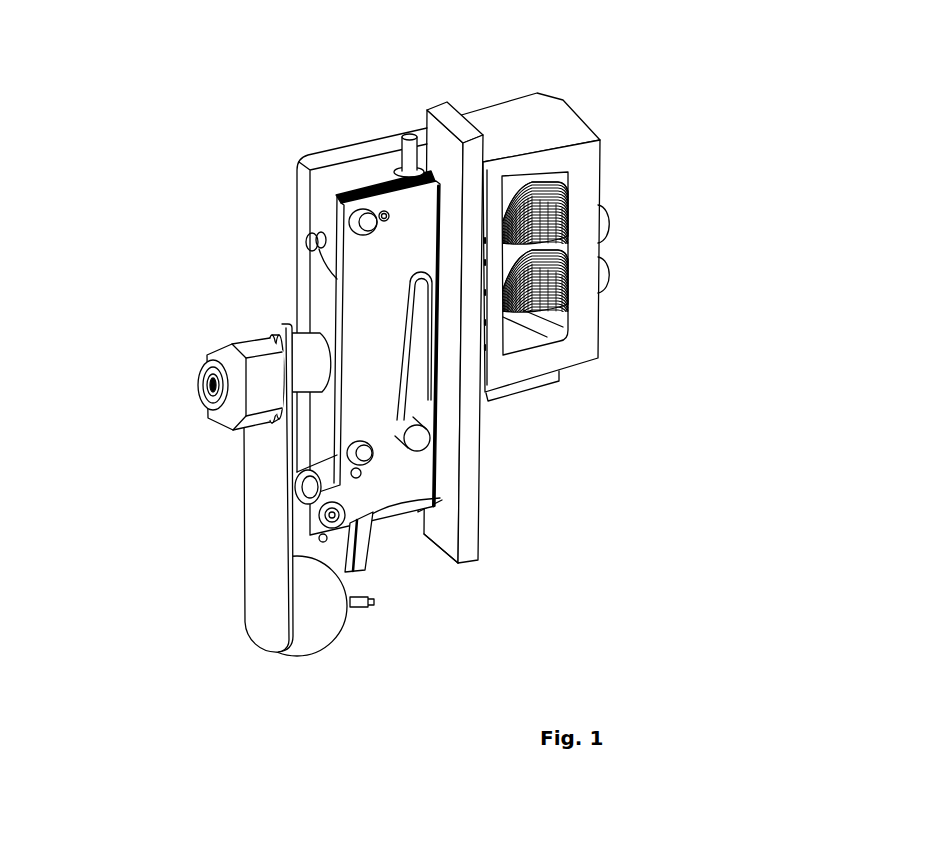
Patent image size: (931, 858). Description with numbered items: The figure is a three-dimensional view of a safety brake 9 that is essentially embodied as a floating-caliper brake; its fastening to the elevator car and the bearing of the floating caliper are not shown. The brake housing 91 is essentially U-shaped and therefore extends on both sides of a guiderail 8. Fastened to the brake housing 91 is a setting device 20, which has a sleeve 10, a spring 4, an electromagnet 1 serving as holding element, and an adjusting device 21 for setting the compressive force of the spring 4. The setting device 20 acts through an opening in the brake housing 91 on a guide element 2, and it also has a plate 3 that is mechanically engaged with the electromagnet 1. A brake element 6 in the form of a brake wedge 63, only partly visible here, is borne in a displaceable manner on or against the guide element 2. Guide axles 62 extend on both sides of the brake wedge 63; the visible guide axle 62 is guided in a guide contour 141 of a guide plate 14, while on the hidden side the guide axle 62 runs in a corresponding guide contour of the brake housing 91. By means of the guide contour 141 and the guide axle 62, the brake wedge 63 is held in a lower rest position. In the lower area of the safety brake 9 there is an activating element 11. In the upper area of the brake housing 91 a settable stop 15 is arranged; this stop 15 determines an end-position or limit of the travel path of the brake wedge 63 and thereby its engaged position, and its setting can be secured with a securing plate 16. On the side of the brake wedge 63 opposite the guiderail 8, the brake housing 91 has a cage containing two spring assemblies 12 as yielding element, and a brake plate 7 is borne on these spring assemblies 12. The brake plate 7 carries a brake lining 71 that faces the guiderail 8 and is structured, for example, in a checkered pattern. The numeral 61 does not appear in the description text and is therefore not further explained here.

The electromagnet 1 is at (307, 593).
The guide element 2 is at (330, 546).
The plate 3 is at (241, 476).
The spring 4 is at (277, 334).
The sleeve 10 is at (275, 379).
The setting device 20 is at (213, 335).
The adjusting device 21 is at (200, 370).
The guide plate 14 is at (300, 232).
The guide contour 141 is at (437, 356).
The settable stop 15 is at (400, 148).
The securing plate 16 is at (340, 167).
The brake element 6 is at (430, 392).
The rail side surface 61 is at (440, 432).
The guide axle 62 is at (497, 448).
The brake wedge 63 is at (455, 122).
The brake plate 7 is at (487, 262).
The brake lining 71 is at (535, 333).
The guiderail 8 is at (562, 108).
The safety brake 9 is at (598, 88).
The brake housing 91 is at (493, 152).
The spring assemblies 12 is at (487, 214).
The activating element 11 is at (385, 555).